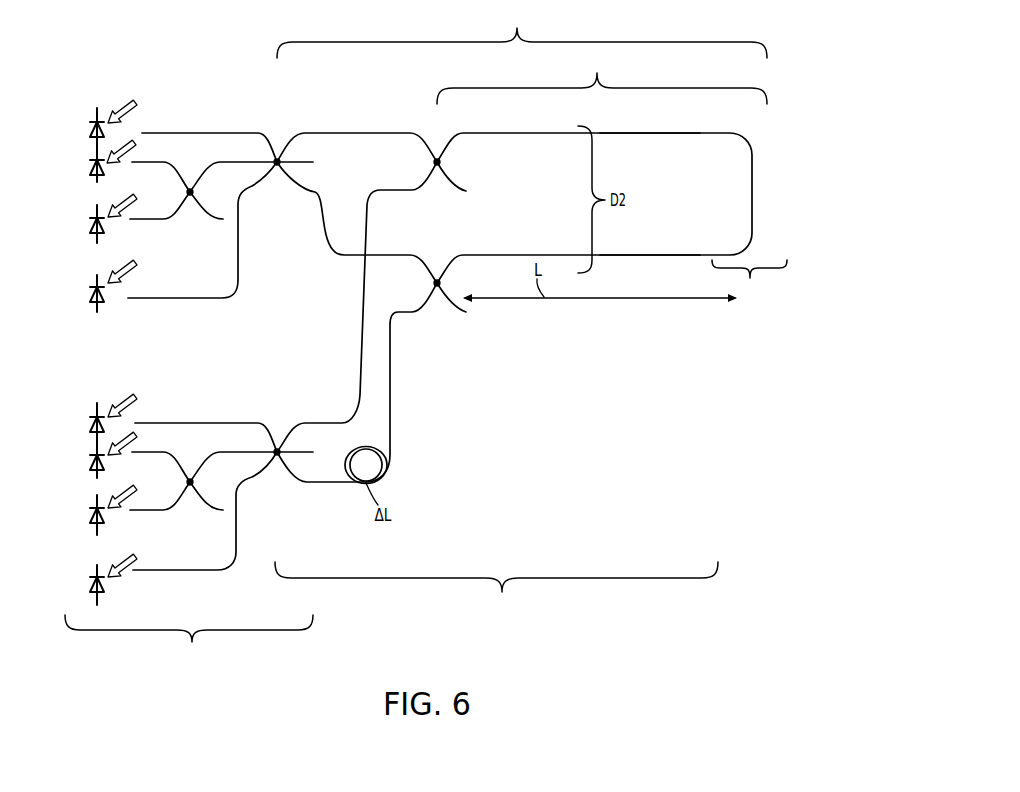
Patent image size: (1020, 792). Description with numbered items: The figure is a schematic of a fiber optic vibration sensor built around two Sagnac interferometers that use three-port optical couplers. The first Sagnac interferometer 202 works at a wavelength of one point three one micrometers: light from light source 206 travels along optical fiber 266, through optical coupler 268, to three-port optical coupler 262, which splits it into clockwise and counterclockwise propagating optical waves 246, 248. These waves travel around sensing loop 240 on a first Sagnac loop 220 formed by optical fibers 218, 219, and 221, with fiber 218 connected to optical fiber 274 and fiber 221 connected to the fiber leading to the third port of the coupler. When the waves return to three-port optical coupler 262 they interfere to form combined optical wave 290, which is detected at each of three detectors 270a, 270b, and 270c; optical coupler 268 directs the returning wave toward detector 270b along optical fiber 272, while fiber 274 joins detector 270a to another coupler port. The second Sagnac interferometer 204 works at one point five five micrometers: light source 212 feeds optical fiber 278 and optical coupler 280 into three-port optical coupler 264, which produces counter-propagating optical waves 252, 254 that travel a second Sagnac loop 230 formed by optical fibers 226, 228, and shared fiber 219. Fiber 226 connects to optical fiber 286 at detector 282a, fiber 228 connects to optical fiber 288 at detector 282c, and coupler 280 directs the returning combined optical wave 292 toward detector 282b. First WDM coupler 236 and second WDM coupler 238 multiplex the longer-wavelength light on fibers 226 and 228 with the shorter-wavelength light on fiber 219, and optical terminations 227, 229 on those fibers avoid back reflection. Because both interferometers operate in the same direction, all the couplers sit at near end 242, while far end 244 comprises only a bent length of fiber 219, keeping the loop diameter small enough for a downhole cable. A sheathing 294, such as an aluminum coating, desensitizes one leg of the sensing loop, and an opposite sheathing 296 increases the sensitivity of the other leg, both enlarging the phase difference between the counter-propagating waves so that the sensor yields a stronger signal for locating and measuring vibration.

The first Sagnac interferometer 202 is at (342, 33).
The second Sagnac interferometer 204 is at (456, 620).
The light source 206 is at (91, 162).
The light source 212 is at (91, 457).
The optical fiber 218 is at (367, 134).
The optical fiber 219 is at (752, 192).
The first Sagnac loop 220 is at (522, 30).
The optical fiber 221 is at (322, 206).
The optical fiber 226 is at (367, 223).
The optical termination 227 is at (466, 191).
The optical fiber 228 is at (392, 427).
The optical termination 229 is at (468, 322).
The second Sagnac loop 230 is at (496, 590).
The first WDM coupler 236 is at (438, 158).
The second WDM coupler 238 is at (436, 288).
The sensing loop 240 is at (602, 74).
The near end 242 is at (189, 643).
The far end 244 is at (749, 279).
The clockwise propagating optical wave 246 is at (322, 105).
The counterclockwise propagating optical wave 248 is at (305, 245).
The clockwise propagating optical wave 252 is at (342, 409).
The counterclockwise propagating optical wave 254 is at (321, 495).
The 3-port optical coupler 262 is at (279, 158).
The 3-port optical coupler 264 is at (279, 448).
The optical fiber 266 is at (152, 162).
The optical coupler 268 is at (194, 188).
The detector 270a is at (91, 124).
The detector 270b is at (91, 219).
The detector 270c is at (91, 288).
The optical fiber 272 is at (162, 222).
The optical fiber 274 is at (178, 133).
The optical fiber 278 is at (160, 453).
The optical coupler 280 is at (251, 458).
The detector 282a is at (91, 420).
The detector 282b is at (91, 510).
The detector 282c is at (91, 580).
The optical fiber 286 is at (150, 423).
The optical fiber 288 is at (190, 571).
The combined optical wave 290 is at (247, 158).
The combined optical wave 292 is at (248, 455).
The sheathing 294 is at (661, 254).
The sheathing 296 is at (680, 134).